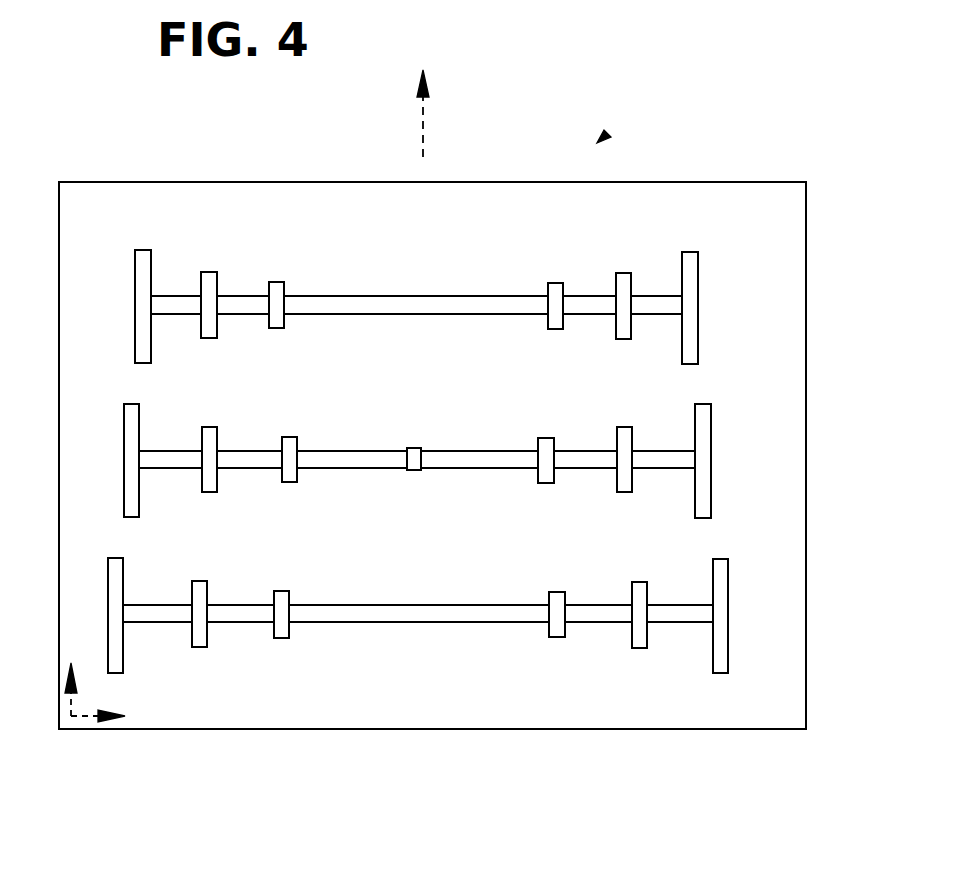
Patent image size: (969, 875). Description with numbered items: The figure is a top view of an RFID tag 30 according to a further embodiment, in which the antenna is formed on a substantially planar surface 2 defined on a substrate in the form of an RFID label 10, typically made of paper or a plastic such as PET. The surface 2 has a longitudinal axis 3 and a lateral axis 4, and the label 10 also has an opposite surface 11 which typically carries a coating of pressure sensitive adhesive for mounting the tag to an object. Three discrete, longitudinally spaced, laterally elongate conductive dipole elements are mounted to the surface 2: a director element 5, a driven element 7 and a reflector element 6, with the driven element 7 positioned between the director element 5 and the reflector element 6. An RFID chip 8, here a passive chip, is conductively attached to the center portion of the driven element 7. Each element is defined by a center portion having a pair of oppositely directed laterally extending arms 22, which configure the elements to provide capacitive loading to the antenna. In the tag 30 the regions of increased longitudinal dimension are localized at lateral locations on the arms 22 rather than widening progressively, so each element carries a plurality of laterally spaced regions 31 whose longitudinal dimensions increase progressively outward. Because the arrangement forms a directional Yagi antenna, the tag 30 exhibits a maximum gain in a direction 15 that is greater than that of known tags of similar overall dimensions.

The surface 2 is at (240, 192).
The longitudinal axis 3 is at (71, 703).
The lateral axis 4 is at (87, 717).
The director element 5 is at (421, 306).
The reflector element 6 is at (429, 612).
The driven element 7 is at (366, 458).
The RFID chip 8 is at (413, 470).
The RFID label 10 is at (746, 192).
The opposite surface 11 is at (490, 742).
The direction of maximum gain 15 is at (423, 126).
The arms 22 is at (174, 306).
The tag 30 is at (605, 135).
The regions 31 is at (143, 256).